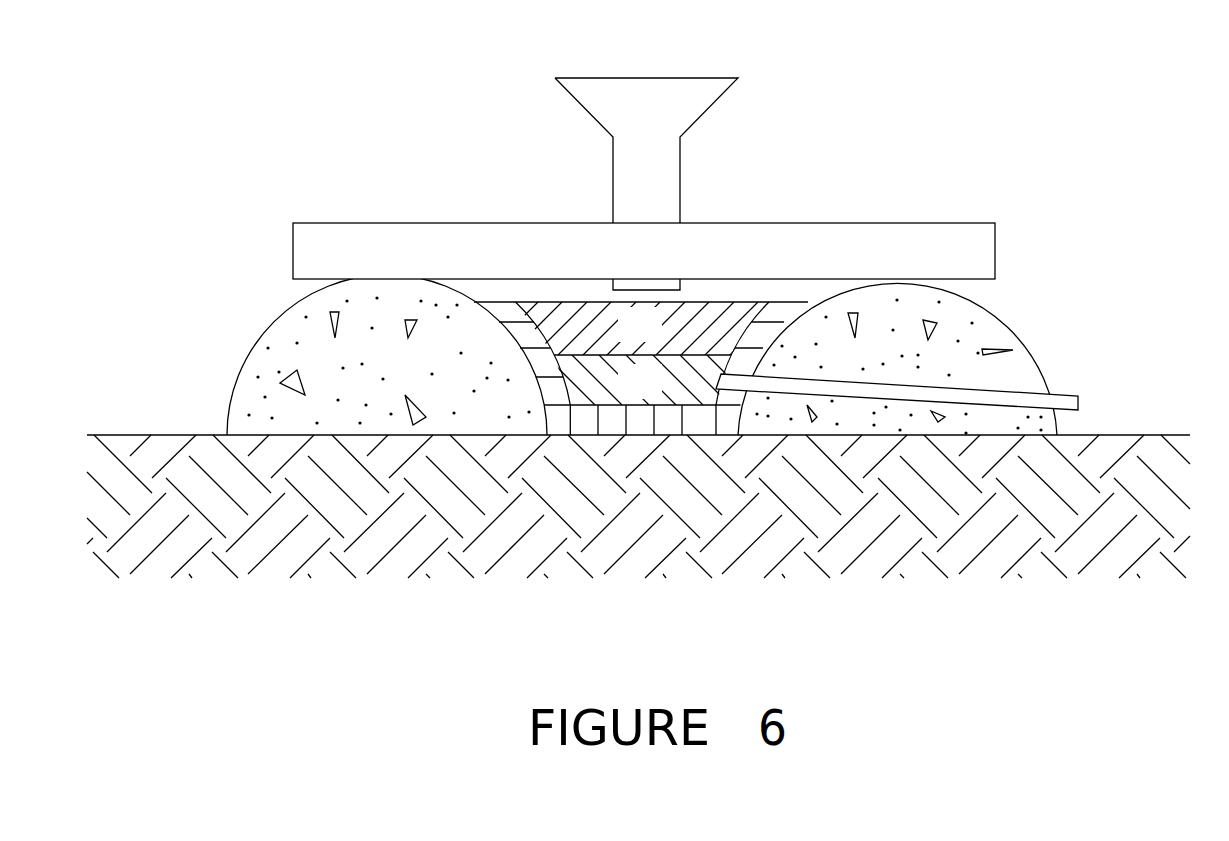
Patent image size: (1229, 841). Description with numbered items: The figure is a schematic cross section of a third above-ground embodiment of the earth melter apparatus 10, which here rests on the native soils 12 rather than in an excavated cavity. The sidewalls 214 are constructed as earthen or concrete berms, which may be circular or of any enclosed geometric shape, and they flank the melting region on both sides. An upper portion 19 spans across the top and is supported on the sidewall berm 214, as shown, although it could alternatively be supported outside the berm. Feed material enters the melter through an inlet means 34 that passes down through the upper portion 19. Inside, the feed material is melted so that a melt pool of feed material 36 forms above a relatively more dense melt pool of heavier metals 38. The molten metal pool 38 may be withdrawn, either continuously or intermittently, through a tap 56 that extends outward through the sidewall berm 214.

The earth melter apparatus 10 is at (708, 361).
The native soils 12 is at (668, 641).
The upper portion 19 is at (842, 203).
The inlet means 34 is at (680, 170).
The melt pool of feed material 36 is at (658, 339).
The melt pool of heavier metals 38 is at (658, 396).
The tap 56 is at (855, 400).
The sidewalls 214 is at (1003, 318).